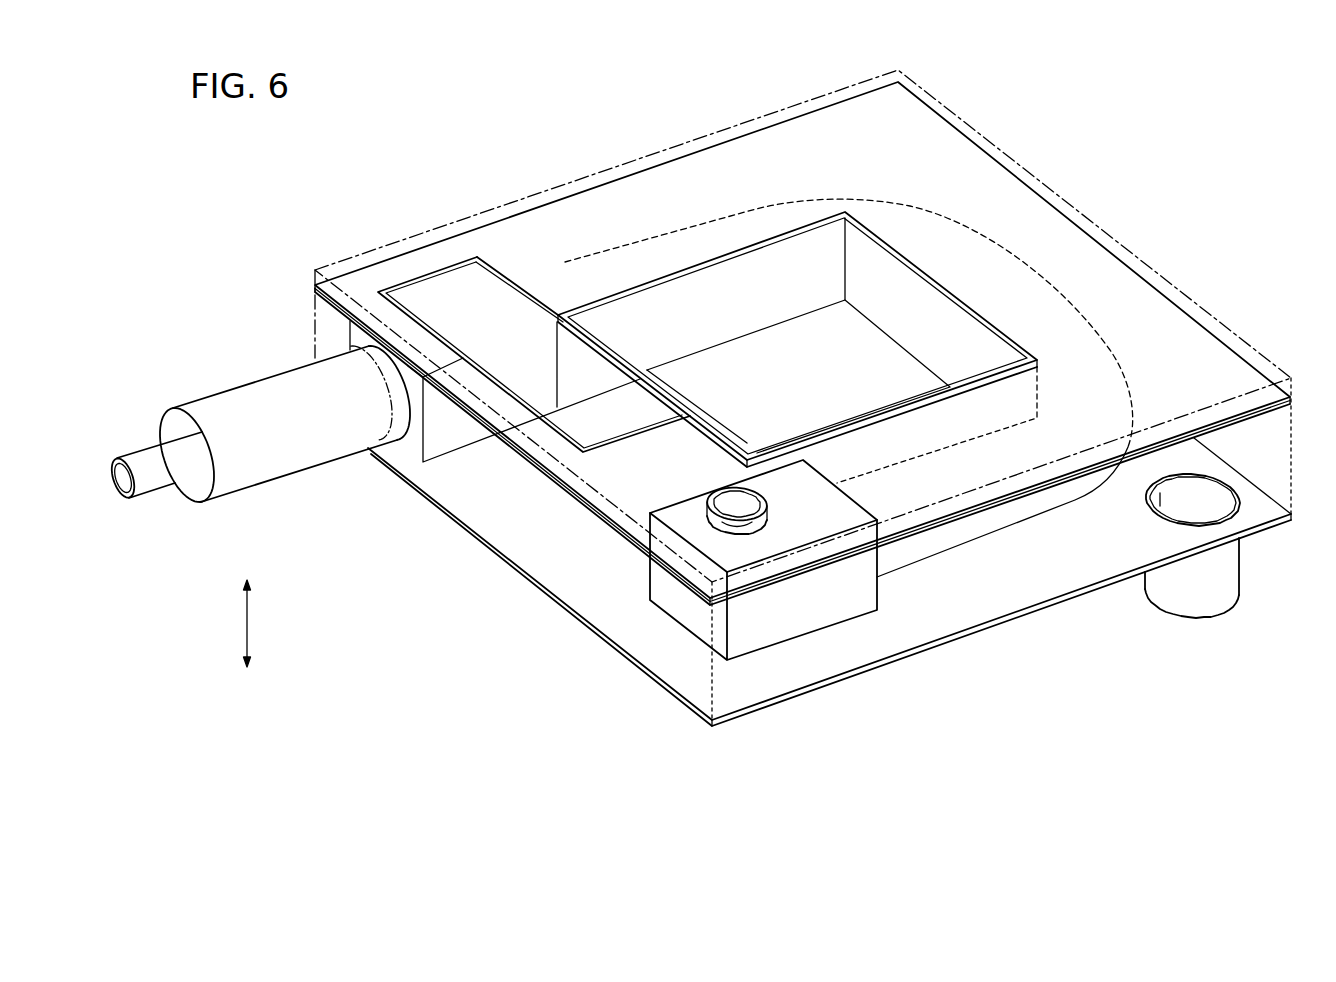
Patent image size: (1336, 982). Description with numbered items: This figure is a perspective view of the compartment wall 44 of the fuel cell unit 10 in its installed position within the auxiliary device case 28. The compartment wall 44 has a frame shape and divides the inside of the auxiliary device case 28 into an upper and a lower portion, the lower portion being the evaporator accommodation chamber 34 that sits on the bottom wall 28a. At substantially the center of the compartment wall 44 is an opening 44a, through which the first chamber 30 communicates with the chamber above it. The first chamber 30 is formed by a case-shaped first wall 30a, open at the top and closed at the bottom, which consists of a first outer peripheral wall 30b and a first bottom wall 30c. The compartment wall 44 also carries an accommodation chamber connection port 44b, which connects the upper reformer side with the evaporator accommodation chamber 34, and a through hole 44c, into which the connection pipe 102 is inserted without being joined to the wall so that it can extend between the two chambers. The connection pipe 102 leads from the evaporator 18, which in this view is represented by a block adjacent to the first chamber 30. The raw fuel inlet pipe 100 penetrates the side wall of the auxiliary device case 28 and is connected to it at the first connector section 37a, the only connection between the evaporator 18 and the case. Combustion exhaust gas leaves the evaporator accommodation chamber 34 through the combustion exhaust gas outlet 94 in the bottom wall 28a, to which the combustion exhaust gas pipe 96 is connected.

The electronic device 10 is at (361, 172).
The evaporator 18 is at (818, 613).
The auxiliary device case 28 is at (1226, 320).
The bottom wall 28a is at (1037, 612).
The first chamber 30 is at (879, 278).
The first wall 30a is at (823, 163).
The first outer peripheral wall 30b is at (755, 268).
The first bottom wall 30c is at (815, 338).
The evaporator accommodation chamber 34 is at (510, 518).
The first connector section 37a is at (383, 410).
The compartment wall 44 is at (1037, 215).
The opening 44a is at (660, 290).
The accommodation chamber connection port 44b is at (447, 268).
The through hole 44c is at (748, 519).
The combustion exhaust gas outlet 94 is at (1222, 492).
The combustion exhaust gas pipe 96 is at (1188, 600).
The raw fuel inlet pipe 100 is at (232, 410).
The connection pipe 102 is at (768, 505).